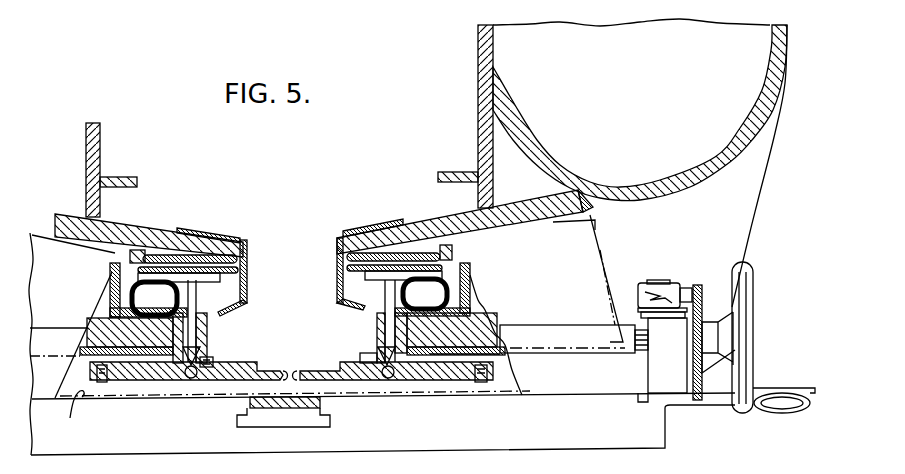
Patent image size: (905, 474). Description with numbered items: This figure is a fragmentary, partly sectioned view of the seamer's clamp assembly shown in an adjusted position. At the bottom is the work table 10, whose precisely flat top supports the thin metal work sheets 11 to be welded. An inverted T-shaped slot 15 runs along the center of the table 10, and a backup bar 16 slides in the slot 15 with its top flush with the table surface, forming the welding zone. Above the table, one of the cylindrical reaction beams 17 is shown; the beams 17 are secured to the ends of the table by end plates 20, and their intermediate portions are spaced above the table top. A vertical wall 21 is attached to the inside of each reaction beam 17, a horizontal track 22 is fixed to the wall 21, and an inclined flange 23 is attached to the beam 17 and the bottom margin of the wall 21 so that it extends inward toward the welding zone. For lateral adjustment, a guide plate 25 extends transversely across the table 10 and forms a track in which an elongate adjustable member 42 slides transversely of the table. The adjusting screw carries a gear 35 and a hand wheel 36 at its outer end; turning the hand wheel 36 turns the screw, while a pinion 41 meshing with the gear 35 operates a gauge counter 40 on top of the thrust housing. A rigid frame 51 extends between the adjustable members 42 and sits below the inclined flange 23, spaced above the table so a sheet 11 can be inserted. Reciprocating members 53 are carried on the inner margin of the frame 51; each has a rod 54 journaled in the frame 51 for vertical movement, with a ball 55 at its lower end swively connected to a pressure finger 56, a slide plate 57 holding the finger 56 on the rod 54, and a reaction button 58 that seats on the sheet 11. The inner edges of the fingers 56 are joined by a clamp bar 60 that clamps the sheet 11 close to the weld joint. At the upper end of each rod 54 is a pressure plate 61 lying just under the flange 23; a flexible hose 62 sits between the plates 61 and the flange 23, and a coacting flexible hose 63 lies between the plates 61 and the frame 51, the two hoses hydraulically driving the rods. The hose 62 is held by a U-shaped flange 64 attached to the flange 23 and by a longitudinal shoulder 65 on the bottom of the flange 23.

The work table 10 is at (167, 445).
The work sheets 11 is at (790, 377).
The inverted T-shaped slot 15 is at (308, 427).
The backup bar 16 is at (257, 410).
The reaction beams 17 is at (757, 96).
The end plates 20 is at (748, 210).
The vertical wall 21 is at (86, 139).
The horizontal track 22 is at (126, 177).
The inclined flange 23 is at (127, 234).
The guide plate 25 is at (577, 389).
The gear 35 is at (700, 373).
The hand wheel 36 is at (755, 345).
The gauge counter 40 is at (660, 284).
The pinion 41 is at (698, 285).
The adjustable member 42 is at (565, 325).
The rigid frame 51 is at (43, 250).
The reciprocating members 53 is at (133, 384).
The rod 54 is at (208, 330).
The ball 55 is at (190, 380).
The pressure finger 56 is at (151, 381).
The slide plate 57 is at (214, 361).
The reaction button 58 is at (102, 384).
The clamp bar 60 is at (302, 372).
The pressure plate 61 is at (205, 279).
The flexible hose 62 is at (253, 249).
The coacting flexible hose 63 is at (132, 295).
The U-shaped flange 64 is at (220, 227).
The longitudinal shoulder 65 is at (128, 258).